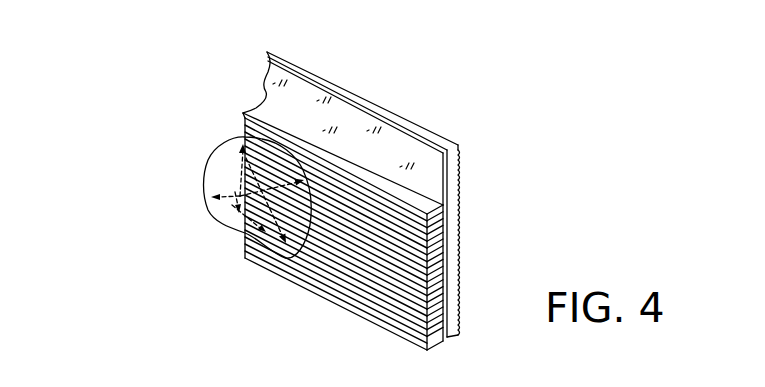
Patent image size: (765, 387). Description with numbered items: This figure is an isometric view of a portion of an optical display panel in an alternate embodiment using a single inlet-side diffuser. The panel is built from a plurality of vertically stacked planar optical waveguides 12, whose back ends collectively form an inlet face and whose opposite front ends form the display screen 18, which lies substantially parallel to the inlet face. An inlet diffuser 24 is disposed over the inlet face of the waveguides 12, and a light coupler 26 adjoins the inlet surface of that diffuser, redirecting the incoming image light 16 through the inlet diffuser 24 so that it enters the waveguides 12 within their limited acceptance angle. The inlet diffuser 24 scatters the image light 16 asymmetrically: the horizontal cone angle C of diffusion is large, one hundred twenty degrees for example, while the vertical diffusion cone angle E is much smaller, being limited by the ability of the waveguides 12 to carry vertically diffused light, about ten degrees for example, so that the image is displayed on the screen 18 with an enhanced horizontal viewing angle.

The planar optical waveguides 12 is at (243, 113).
The image light 16 is at (216, 143).
The display screen 18 is at (403, 304).
The inlet diffuser 24 is at (271, 70).
The light coupler 26 is at (462, 267).
The vertical diffusion cone angle E is at (212, 162).
The horizontal cone angle C is at (263, 252).